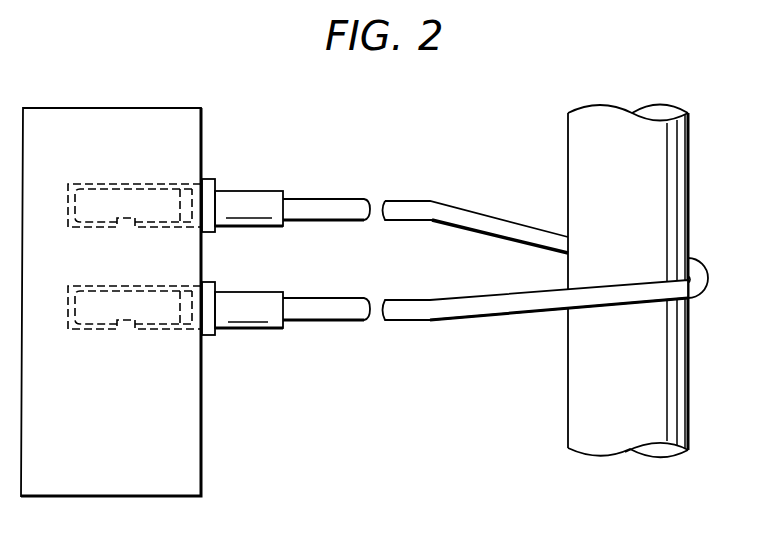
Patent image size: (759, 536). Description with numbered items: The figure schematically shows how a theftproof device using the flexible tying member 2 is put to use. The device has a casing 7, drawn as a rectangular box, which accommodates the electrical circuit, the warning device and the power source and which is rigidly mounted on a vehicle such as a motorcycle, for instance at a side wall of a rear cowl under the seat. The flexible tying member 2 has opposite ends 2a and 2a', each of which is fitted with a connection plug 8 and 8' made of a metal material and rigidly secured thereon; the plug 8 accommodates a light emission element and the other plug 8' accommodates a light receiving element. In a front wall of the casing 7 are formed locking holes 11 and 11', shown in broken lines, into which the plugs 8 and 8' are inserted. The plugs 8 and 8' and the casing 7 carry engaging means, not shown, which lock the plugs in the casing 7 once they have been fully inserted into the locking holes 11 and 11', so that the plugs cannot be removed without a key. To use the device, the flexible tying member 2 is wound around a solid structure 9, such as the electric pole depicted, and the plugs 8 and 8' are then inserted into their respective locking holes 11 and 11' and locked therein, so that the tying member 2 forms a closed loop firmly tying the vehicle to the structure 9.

The flexible tying member 2 is at (353, 202).
The end of flexible tying member 2a is at (326, 185).
The end of flexible tying member 2a' is at (326, 286).
The casing 7 is at (190, 470).
The connection plug 8 is at (242, 180).
The connection plug 8' is at (243, 291).
The solid structure 9 is at (577, 157).
The locking hole 11 is at (161, 171).
The locking hole 11' is at (162, 284).